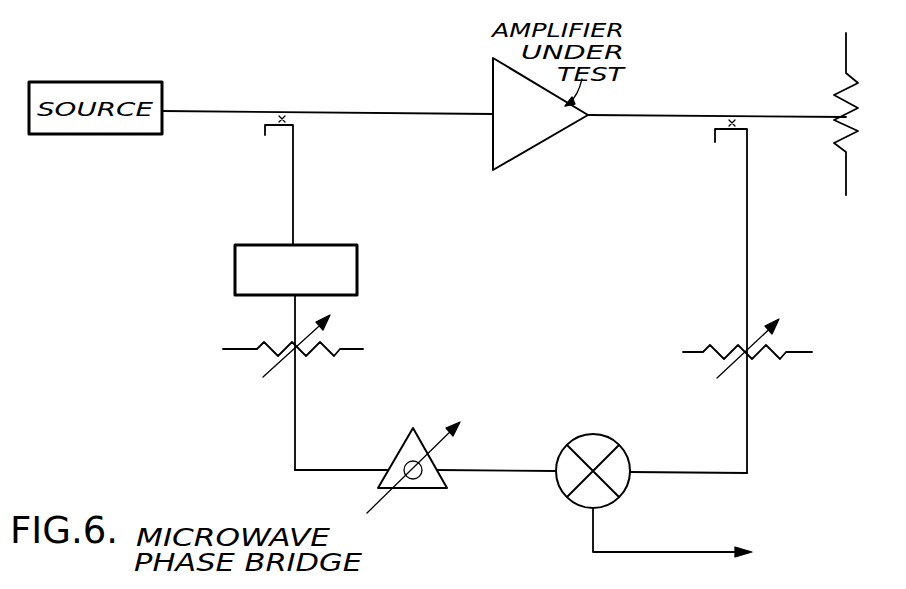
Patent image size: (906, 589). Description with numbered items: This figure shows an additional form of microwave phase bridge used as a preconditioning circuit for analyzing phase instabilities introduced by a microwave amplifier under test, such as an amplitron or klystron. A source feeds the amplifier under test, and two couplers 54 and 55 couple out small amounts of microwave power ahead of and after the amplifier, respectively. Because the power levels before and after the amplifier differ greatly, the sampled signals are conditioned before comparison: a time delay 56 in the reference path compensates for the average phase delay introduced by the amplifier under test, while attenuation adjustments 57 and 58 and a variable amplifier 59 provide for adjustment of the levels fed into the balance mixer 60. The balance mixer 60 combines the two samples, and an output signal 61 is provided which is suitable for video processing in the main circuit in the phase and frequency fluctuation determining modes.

The coupler 54 is at (300, 122).
The coupler 55 is at (750, 127).
The time delay 56 is at (357, 263).
The attenuation adjustment 57 is at (262, 344).
The attenuation adjustment 58 is at (780, 350).
The variable amplifier 59 is at (404, 434).
The balance mixer 60 is at (626, 449).
The output signal 61 is at (706, 523).